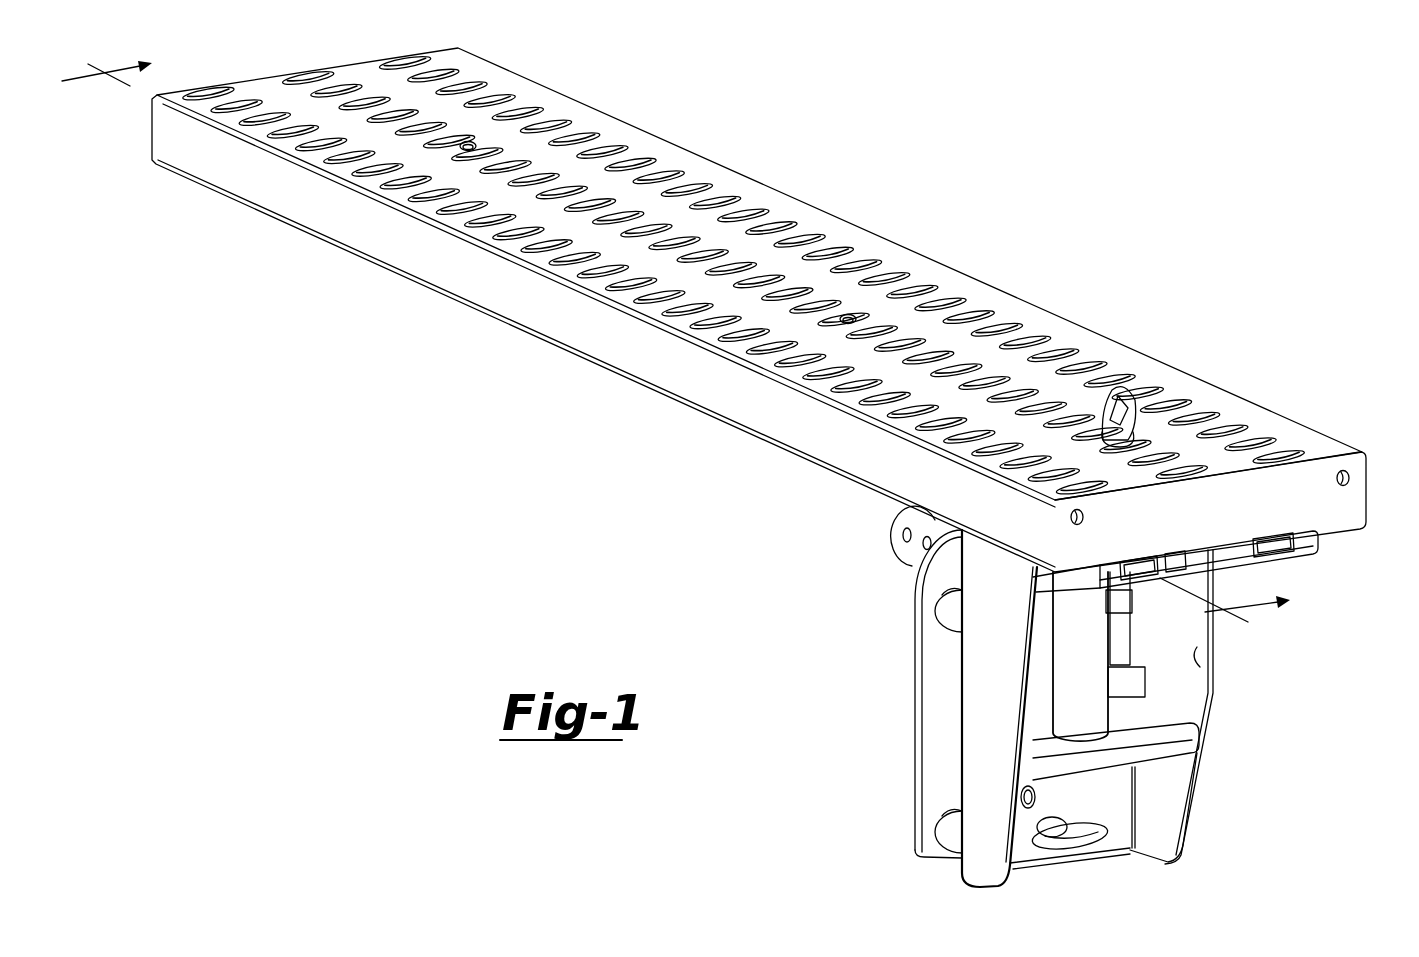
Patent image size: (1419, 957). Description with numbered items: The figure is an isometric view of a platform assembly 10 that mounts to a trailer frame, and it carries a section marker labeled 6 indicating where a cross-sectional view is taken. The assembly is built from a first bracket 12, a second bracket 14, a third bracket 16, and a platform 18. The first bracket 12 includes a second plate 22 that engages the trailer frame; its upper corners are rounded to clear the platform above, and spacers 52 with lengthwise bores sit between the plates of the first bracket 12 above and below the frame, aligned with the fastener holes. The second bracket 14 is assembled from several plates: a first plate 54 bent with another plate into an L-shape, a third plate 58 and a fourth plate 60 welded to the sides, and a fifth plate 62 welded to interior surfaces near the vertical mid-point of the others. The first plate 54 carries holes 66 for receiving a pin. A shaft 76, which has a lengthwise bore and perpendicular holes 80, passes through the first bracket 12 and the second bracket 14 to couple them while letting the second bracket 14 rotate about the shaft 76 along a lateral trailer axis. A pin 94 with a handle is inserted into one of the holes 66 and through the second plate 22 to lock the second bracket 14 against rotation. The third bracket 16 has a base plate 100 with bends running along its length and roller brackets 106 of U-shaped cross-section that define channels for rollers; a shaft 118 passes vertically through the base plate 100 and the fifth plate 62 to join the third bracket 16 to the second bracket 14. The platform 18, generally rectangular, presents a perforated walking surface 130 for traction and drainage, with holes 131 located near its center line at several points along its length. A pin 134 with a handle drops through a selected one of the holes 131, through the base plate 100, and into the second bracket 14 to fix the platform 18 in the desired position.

The platform assembly 10 is at (1052, 118).
The first bracket 12 is at (903, 709).
The second bracket 14 is at (1278, 713).
The third bracket 16 is at (1357, 558).
The platform 18 is at (948, 263).
The second plate 22 is at (928, 790).
The spacers 52 is at (948, 606).
The first plate 54 is at (1103, 802).
The third plate 58 is at (976, 656).
The fourth plate 60 is at (1210, 660).
The fifth plate 62 is at (1147, 722).
The holes 66 is at (1040, 800).
The shaft 76 is at (903, 516).
The holes 80 is at (922, 545).
The pin 94 is at (1092, 842).
The base plate 100 is at (1210, 563).
The roller brackets 106 is at (1285, 546).
The shaft 118 is at (1087, 700).
The walking surface 130 is at (645, 205).
The holes 131 is at (470, 140).
The pin 134 is at (1116, 385).
The section line 6 is at (662, 348).